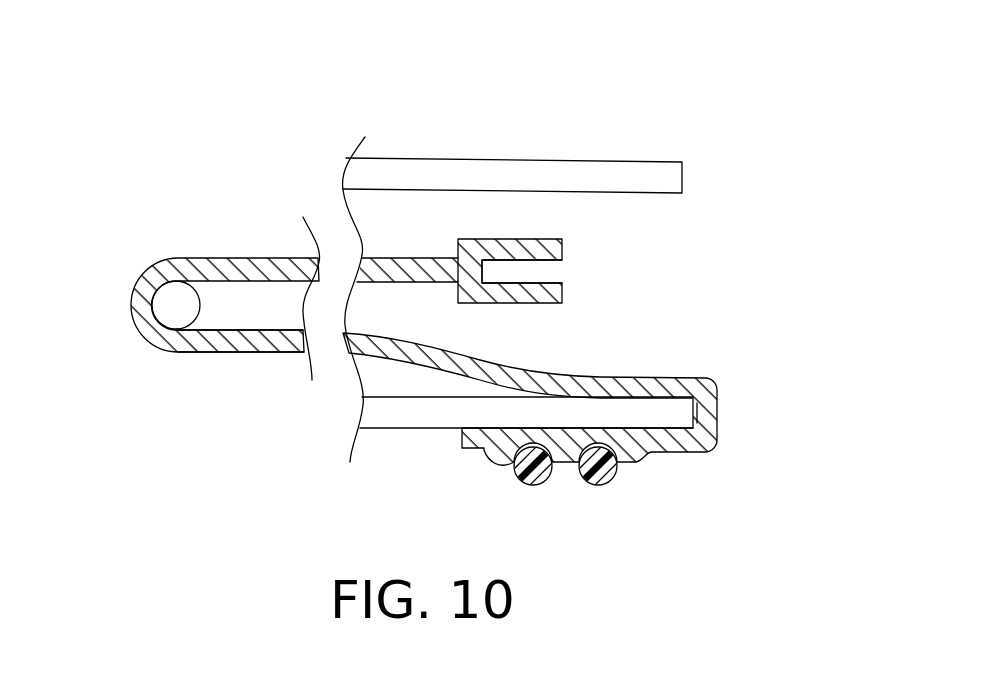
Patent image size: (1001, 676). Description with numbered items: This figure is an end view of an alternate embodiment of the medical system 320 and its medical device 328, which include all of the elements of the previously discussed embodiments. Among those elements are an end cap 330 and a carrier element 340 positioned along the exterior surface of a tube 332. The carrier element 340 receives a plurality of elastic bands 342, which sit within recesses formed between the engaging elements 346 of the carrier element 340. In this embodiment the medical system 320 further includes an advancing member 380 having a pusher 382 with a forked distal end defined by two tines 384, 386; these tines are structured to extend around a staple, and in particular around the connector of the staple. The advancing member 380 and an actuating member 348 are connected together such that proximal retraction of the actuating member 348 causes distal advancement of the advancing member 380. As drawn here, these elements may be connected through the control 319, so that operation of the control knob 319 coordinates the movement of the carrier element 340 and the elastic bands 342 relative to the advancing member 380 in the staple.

The medical system 320 is at (183, 86).
The medical device 328 is at (455, 117).
The end cap 330 is at (587, 160).
The pusher 382 is at (377, 267).
The tine 384 is at (513, 238).
The tine 386 is at (513, 282).
The advancing member 380 is at (286, 254).
The actuating member 348 is at (230, 345).
The control knob 319 is at (175, 318).
The carrier element 340 is at (682, 453).
The elastic band 342 is at (543, 482).
The engaging element 346 is at (563, 458).
The tube 332 is at (383, 410).